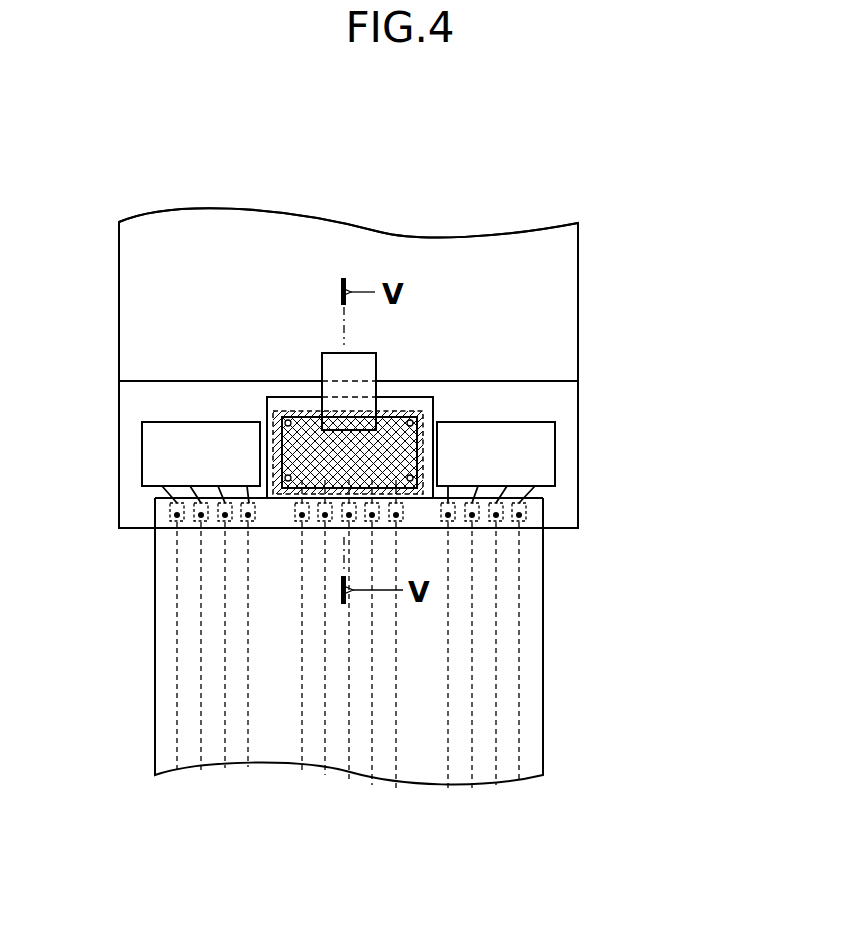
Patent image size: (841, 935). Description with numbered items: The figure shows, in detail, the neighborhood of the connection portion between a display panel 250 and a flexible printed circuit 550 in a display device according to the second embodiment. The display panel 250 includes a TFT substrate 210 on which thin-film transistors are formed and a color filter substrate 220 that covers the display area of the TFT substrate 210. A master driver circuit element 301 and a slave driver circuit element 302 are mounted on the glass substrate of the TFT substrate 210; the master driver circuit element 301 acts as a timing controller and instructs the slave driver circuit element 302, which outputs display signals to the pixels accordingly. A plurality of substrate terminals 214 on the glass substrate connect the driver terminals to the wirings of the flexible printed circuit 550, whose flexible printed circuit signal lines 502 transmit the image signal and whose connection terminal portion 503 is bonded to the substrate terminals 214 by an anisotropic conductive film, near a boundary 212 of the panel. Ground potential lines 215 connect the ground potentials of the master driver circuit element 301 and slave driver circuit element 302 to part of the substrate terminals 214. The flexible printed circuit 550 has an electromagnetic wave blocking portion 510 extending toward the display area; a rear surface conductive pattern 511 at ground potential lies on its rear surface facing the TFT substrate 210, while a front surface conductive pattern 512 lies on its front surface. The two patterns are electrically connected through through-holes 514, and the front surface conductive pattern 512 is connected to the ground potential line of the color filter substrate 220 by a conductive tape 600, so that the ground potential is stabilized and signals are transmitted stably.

The display panel 250 is at (702, 362).
The color filter substrate 220 is at (568, 320).
The TFT substrate 210 is at (568, 388).
The housing partition line 212 is at (550, 497).
The substrate terminals 214 is at (533, 508).
The connection terminal portion 503 is at (412, 521).
The flexible printed circuit signal lines 502 is at (522, 640).
The flexible printed circuit 550 is at (530, 733).
The ground potential lines 215 is at (293, 496).
The master driver circuit element 301 is at (150, 453).
The slave driver circuit element 302 is at (548, 443).
The electromagnetic wave blocking portion 510 is at (285, 397).
The rear surface conductive pattern 511 is at (268, 412).
The front surface conductive pattern 512 is at (398, 410).
The through-holes 514 is at (409, 418).
The conductive tape 600 is at (333, 362).